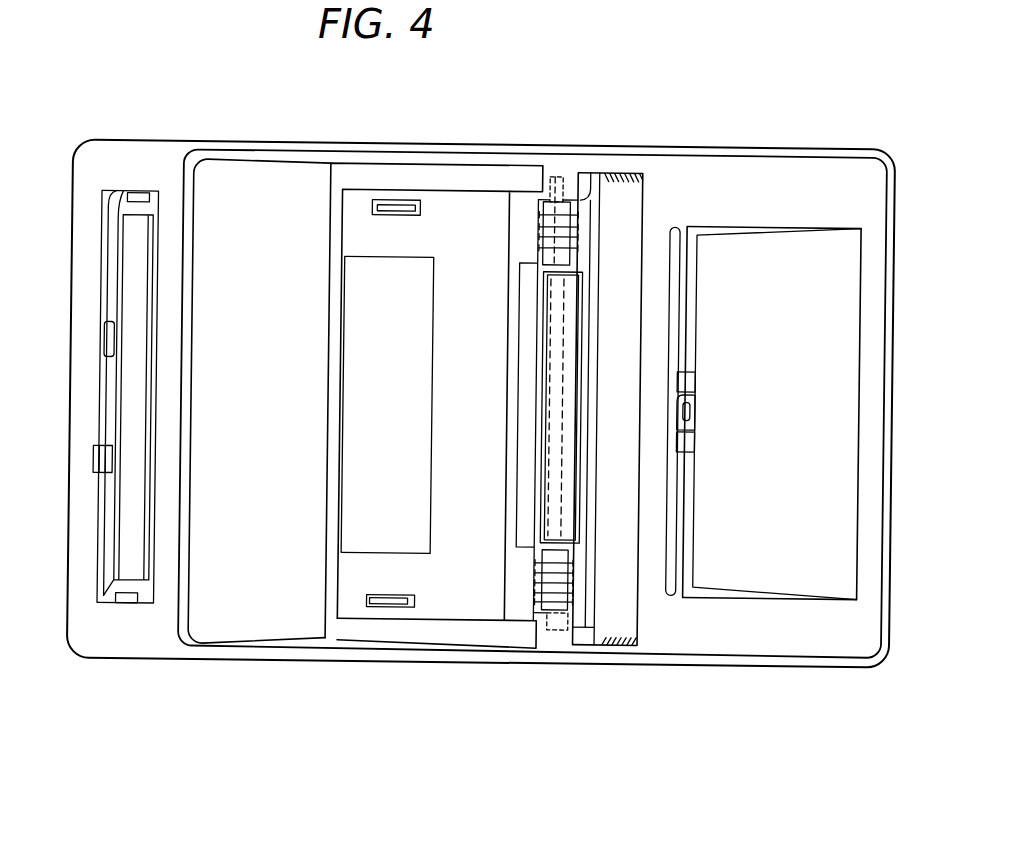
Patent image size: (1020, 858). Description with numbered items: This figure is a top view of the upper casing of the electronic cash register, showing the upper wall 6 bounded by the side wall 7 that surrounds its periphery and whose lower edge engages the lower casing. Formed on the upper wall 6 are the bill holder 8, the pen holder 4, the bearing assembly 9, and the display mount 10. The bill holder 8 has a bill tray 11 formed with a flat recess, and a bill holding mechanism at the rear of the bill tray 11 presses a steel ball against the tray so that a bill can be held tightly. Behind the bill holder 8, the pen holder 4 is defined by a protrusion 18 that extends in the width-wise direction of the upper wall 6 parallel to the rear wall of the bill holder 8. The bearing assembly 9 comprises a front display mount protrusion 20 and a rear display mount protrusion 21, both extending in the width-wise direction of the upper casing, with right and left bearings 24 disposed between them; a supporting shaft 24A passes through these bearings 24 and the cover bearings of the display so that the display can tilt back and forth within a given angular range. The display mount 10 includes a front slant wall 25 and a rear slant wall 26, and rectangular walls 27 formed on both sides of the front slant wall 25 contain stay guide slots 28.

The pen holder 4 is at (652, 236).
The upper wall 6 is at (676, 648).
The side wall 7 is at (280, 651).
The bill holder 8 is at (769, 236).
The bearing assembly 9 is at (555, 197).
The display mount 10 is at (428, 408).
The bill tray 11 is at (810, 536).
The protrusion 18 is at (675, 534).
The front display mount protrusion 20 is at (590, 636).
The rear display mount protrusion 21 is at (524, 548).
The bearings 24 is at (575, 210).
The supporting shaft 24A is at (562, 629).
The front slant wall 25 is at (445, 611).
The rear slant wall 26 is at (240, 628).
The rectangular walls 27 is at (380, 201).
The stay guide slots 28 is at (400, 204).